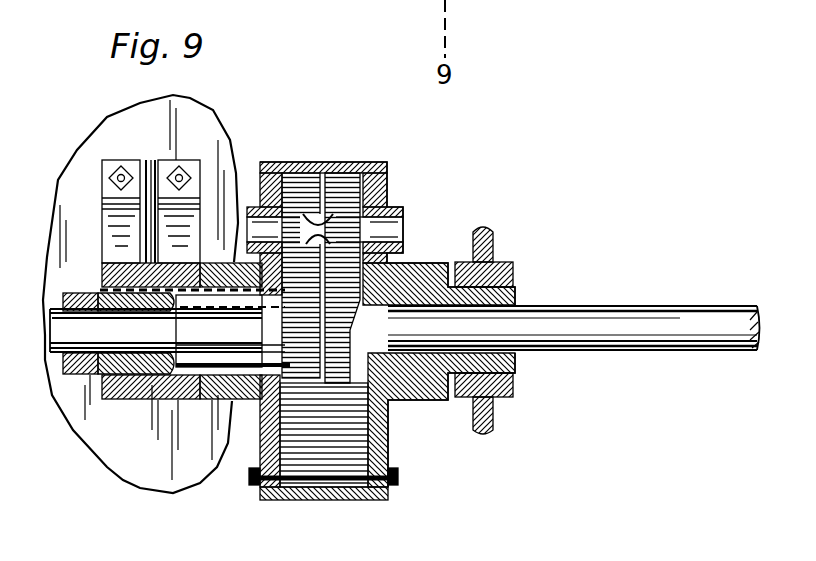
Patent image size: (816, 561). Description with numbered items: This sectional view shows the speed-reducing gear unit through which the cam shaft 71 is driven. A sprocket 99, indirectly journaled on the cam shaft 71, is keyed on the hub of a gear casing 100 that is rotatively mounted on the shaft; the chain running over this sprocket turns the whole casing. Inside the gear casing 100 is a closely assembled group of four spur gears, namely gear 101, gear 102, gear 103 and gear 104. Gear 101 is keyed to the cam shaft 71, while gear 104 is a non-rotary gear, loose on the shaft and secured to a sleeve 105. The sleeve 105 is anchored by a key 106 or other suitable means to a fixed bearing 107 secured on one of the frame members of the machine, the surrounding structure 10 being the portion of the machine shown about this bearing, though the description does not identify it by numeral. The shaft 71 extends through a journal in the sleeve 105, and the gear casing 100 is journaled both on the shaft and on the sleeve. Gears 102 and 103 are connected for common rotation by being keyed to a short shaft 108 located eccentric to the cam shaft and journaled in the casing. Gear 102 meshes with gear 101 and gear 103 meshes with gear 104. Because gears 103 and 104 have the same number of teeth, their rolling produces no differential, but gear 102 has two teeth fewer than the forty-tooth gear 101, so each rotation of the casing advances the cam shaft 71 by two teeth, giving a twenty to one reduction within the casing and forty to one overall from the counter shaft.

The supporting body 10 is at (123, 463).
The cam shaft 71 is at (623, 318).
The sprocket 99 is at (492, 256).
The gear casing 100 is at (380, 163).
The gear 101 is at (340, 390).
The gear 102 is at (357, 170).
The gear 103 is at (303, 170).
The non-rotary gear 104 is at (300, 388).
The sleeve 105 is at (252, 336).
The key 106 is at (135, 288).
The fixed bearing 107 is at (133, 400).
The short shaft 108 is at (401, 221).